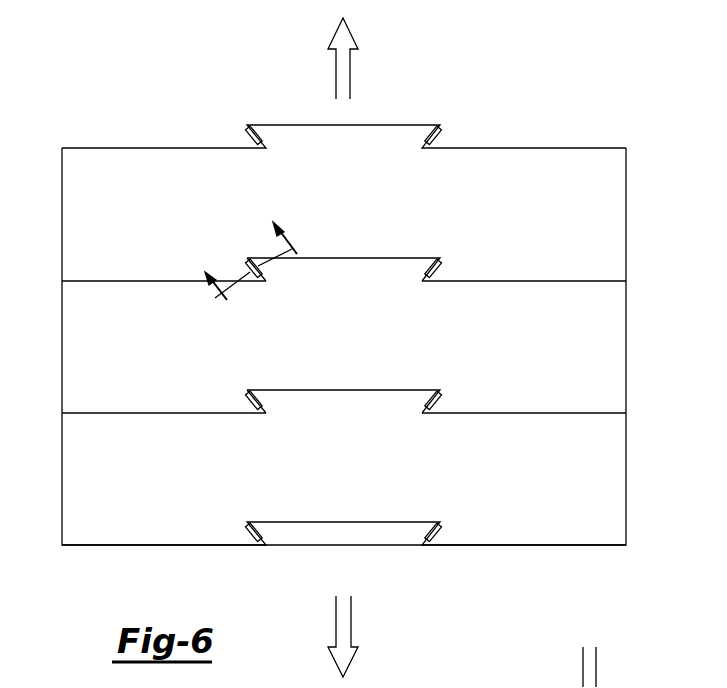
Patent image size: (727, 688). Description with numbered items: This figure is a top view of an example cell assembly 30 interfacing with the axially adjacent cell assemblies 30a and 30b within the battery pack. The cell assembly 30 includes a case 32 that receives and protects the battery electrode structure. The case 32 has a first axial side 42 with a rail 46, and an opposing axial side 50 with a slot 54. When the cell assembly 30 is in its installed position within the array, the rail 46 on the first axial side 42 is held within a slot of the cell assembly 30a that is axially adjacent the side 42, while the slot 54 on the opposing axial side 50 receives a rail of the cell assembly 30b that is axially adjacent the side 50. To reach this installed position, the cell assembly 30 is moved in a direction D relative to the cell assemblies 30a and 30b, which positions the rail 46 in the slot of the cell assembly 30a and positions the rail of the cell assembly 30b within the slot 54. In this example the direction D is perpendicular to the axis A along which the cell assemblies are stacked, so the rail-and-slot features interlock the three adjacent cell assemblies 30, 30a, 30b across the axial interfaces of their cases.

The cell assembly 30 is at (626, 367).
The cell assembly 30a is at (626, 215).
The cell assembly 30b is at (626, 482).
The case 32 is at (626, 308).
The first axial side 42 is at (520, 281).
The rail 46 is at (368, 258).
The opposing axial side 50 is at (516, 413).
The slot 54 is at (348, 390).
The axis A is at (351, 622).
The direction D is at (596, 672).